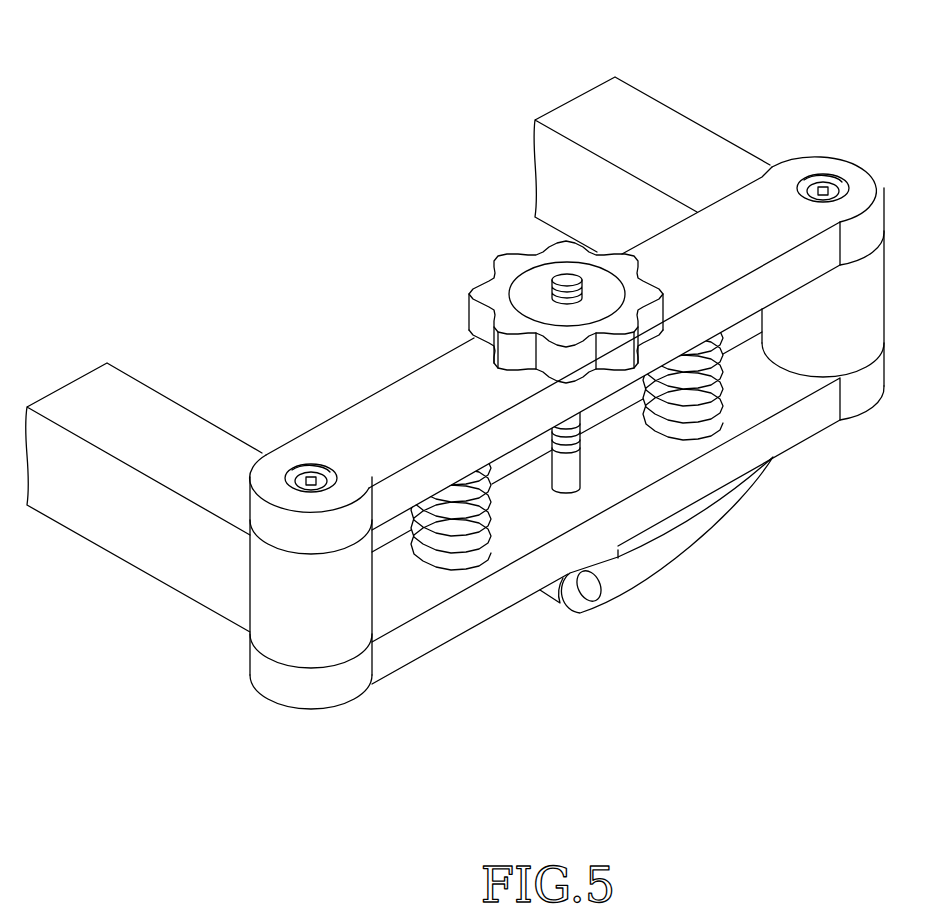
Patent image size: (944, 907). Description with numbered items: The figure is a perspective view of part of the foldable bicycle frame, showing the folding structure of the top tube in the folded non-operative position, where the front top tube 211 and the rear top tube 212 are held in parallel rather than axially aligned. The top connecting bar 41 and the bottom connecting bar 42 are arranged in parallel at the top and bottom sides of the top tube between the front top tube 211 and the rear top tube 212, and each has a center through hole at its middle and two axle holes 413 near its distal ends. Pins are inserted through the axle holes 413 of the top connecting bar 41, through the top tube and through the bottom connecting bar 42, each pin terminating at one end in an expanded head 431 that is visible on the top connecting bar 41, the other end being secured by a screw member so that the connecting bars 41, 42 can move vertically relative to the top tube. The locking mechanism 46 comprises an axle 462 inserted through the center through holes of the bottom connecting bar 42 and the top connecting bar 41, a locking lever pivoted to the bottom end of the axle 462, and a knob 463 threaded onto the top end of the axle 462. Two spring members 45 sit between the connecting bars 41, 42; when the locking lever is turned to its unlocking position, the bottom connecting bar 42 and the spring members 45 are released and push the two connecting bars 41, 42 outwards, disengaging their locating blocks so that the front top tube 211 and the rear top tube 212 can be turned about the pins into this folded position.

The front top tube 211 is at (150, 396).
The rear top tube 212 is at (672, 132).
The top connecting bar 41 is at (447, 384).
The bottom connecting bar 42 is at (418, 600).
The axle holes 413 is at (327, 462).
The expanded head 431 is at (303, 478).
The spring members 45 is at (490, 573).
The locking mechanism 46 is at (640, 582).
The axle 462 is at (552, 272).
The knob 463 is at (476, 267).